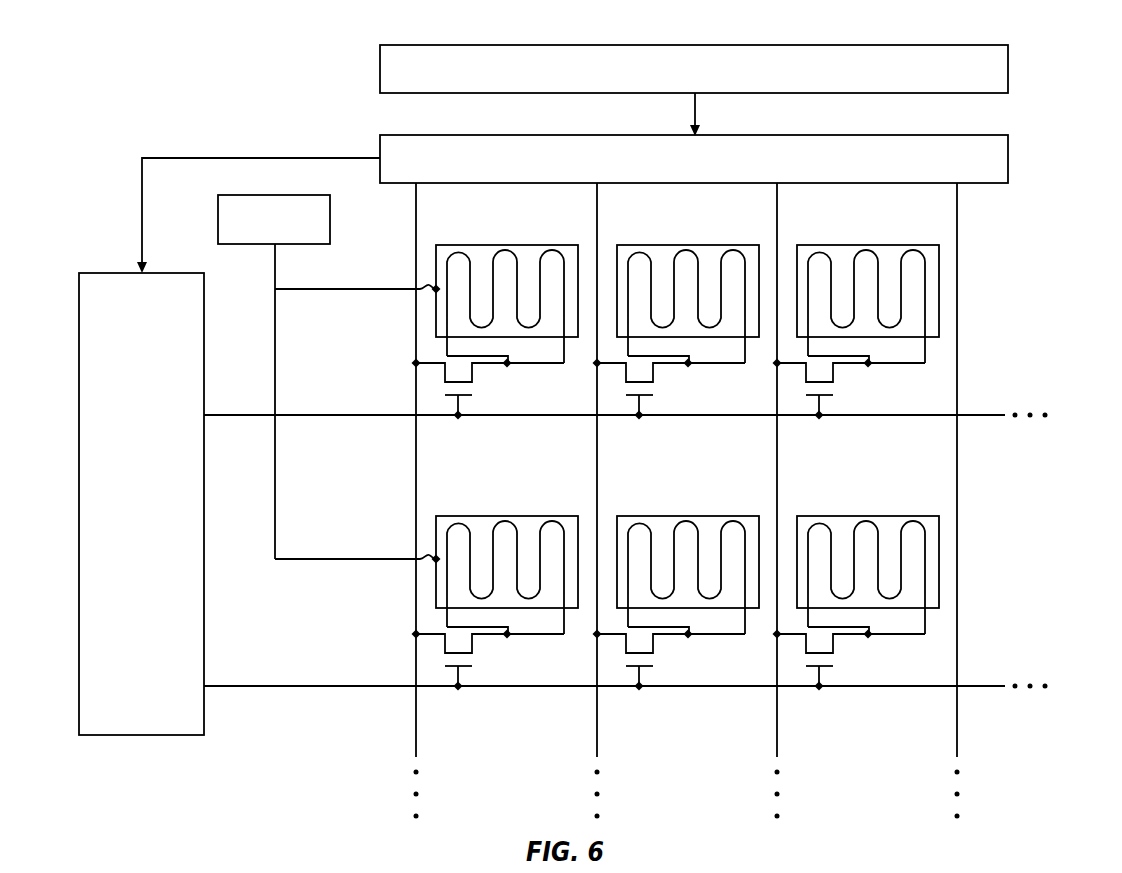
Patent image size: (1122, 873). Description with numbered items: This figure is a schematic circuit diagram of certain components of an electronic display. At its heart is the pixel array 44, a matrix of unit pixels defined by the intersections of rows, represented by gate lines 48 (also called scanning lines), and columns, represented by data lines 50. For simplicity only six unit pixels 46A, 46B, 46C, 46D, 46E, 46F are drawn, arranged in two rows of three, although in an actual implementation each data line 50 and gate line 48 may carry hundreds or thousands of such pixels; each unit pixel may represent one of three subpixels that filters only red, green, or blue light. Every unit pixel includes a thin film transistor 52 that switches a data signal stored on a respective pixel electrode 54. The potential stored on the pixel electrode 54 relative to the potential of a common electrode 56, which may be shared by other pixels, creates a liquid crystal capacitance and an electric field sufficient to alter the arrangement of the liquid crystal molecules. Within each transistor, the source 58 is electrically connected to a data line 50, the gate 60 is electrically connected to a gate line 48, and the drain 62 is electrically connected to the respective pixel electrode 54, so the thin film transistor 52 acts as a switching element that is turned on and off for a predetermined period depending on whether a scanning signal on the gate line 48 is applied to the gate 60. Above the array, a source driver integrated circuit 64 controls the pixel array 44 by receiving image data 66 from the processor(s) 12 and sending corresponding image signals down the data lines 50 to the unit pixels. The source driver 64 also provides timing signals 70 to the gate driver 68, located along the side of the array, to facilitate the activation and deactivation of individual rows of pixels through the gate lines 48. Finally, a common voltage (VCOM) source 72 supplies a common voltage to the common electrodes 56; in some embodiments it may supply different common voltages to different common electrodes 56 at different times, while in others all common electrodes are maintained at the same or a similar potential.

The processor(s) 12 is at (852, 45).
The pixel array 44 is at (321, 48).
The unit pixel 46A is at (437, 215).
The unit pixel 46B is at (618, 215).
The unit pixel 46C is at (798, 215).
The unit pixel 46D is at (437, 486).
The unit pixel 46E is at (618, 486).
The unit pixel 46F is at (798, 486).
The gate line 48 is at (992, 415).
The data line 50 is at (417, 728).
The thin film transistor 52 is at (477, 387).
The pixel electrode 54 is at (492, 244).
The common electrode 56 is at (521, 244).
The source 58 is at (415, 366).
The gate 60 is at (459, 418).
The drain 62 is at (508, 366).
The source driver integrated circuit 64 is at (853, 135).
The image data 66 is at (696, 104).
The gate driver 68 is at (205, 298).
The timing signals 70 is at (222, 159).
The common voltage (VCOM) source 72 is at (265, 195).